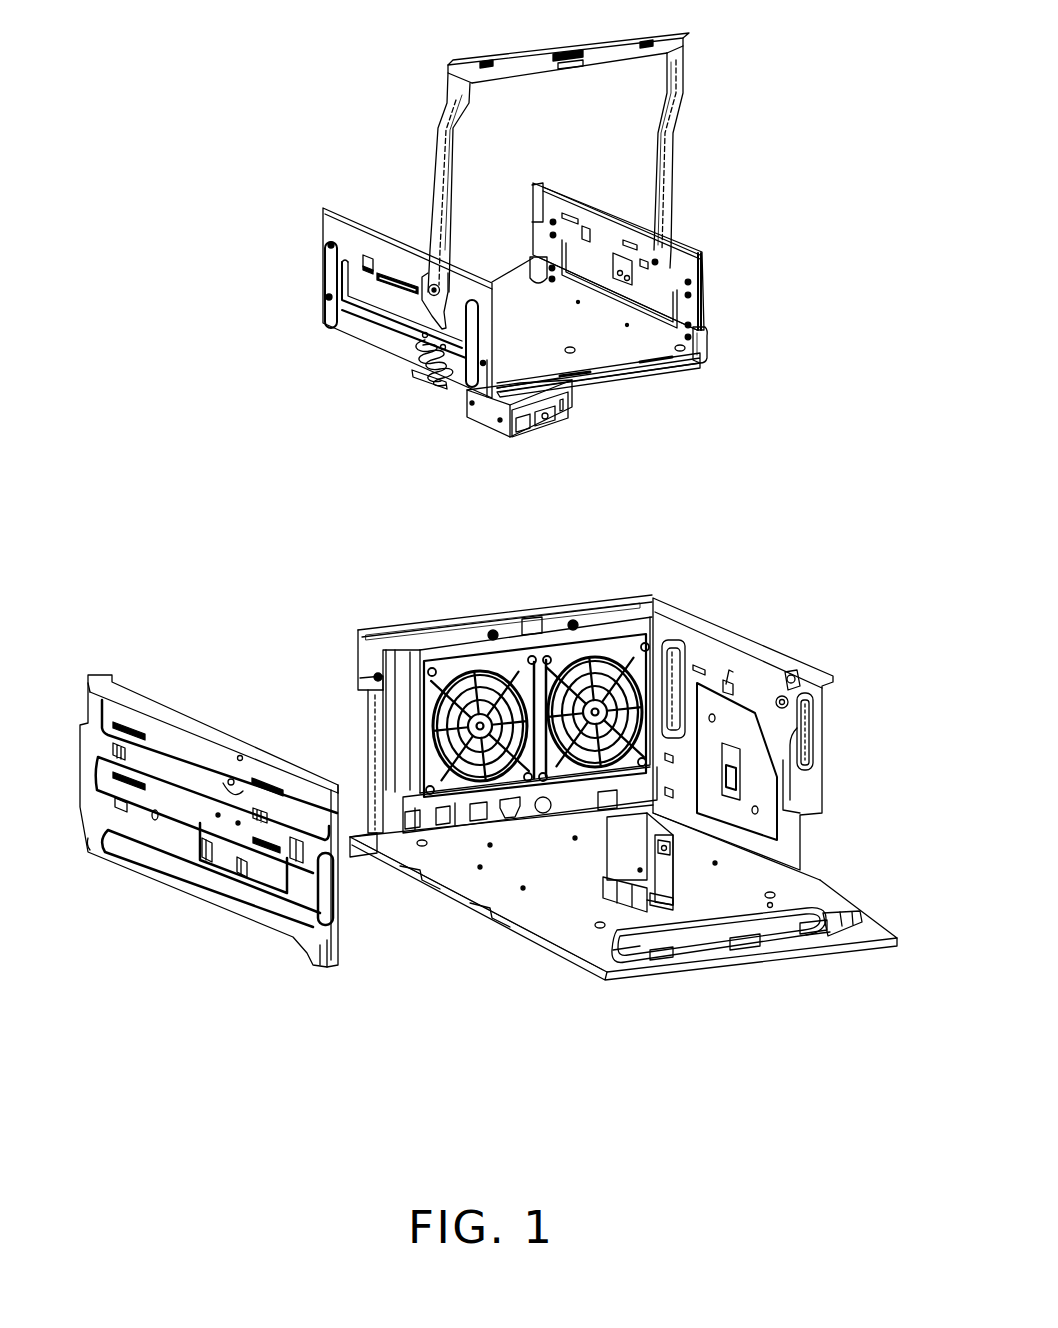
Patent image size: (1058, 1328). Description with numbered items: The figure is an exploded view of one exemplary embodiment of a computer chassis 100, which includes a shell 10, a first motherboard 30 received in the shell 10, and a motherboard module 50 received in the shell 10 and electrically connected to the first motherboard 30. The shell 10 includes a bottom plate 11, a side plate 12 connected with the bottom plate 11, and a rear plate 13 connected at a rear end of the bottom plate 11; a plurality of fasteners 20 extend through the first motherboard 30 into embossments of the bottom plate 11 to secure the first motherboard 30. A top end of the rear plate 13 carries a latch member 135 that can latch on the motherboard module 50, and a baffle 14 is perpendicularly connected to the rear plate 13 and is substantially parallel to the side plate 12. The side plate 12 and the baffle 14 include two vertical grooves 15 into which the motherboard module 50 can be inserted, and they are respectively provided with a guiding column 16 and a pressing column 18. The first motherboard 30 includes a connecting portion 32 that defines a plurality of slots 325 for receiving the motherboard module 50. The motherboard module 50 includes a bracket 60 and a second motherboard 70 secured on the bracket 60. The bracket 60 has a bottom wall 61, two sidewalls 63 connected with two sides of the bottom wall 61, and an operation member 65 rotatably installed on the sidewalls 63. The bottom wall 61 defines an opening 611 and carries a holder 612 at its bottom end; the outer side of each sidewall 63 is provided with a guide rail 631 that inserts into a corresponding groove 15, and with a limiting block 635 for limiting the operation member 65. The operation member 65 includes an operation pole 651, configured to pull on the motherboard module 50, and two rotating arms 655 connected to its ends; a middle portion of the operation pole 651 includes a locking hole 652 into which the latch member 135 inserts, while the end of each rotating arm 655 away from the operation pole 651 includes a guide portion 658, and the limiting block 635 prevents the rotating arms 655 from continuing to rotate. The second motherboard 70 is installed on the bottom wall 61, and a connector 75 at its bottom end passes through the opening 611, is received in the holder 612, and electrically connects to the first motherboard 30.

The computer chassis 100 is at (282, 33).
The motherboard module 50 is at (314, 174).
The bracket 60 is at (835, 63).
The operation member 65 is at (773, 29).
The operation pole 651 is at (667, 55).
The locking hole 652 is at (567, 52).
The rotating arm 655 is at (680, 112).
The sidewall 63 is at (670, 262).
The guide rail 631 is at (324, 302).
The limiting block 635 is at (418, 288).
The guide portion 658 is at (432, 303).
The bottom wall 61 is at (703, 382).
The second motherboard 70 is at (620, 353).
The opening 611 is at (567, 383).
The holder 612 is at (527, 430).
The connector 75 is at (513, 393).
The shell 10 is at (236, 610).
The bottom plate 11 is at (767, 940).
The side plate 12 is at (805, 793).
The rear plate 13 is at (366, 648).
The latch member 135 is at (540, 614).
The baffle 14 is at (323, 935).
The vertical groove 15 is at (803, 727).
The guiding column 16 is at (778, 697).
The pressing column 18 is at (793, 677).
The fastener 20 is at (817, 918).
The first motherboard 30 is at (813, 900).
The connecting portion 32 is at (623, 858).
The slot 325 is at (673, 882).